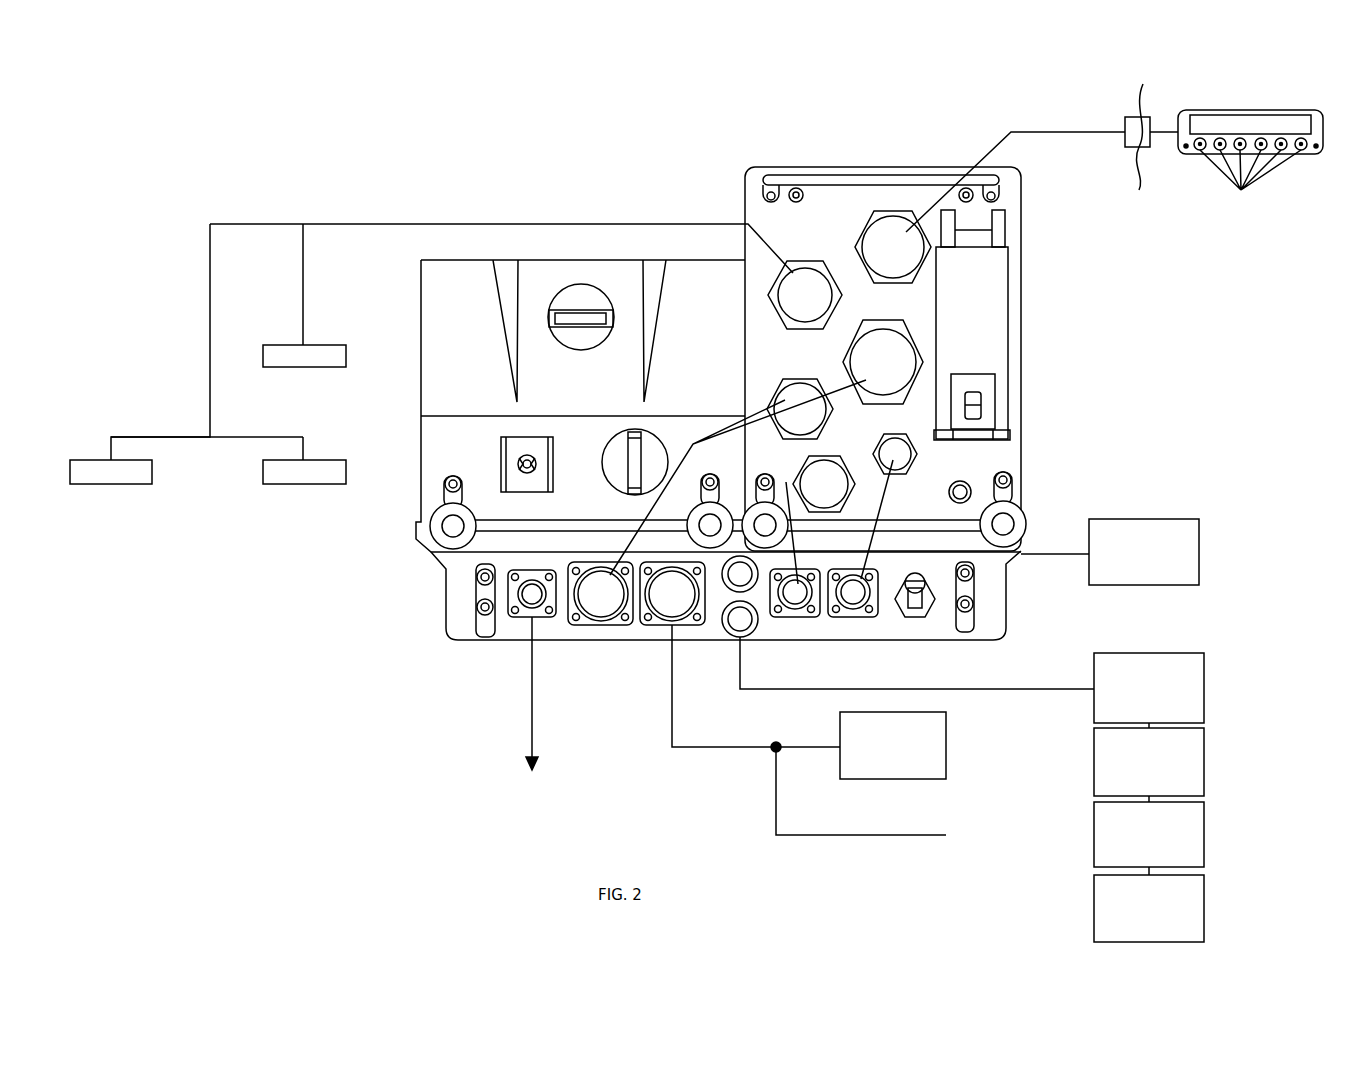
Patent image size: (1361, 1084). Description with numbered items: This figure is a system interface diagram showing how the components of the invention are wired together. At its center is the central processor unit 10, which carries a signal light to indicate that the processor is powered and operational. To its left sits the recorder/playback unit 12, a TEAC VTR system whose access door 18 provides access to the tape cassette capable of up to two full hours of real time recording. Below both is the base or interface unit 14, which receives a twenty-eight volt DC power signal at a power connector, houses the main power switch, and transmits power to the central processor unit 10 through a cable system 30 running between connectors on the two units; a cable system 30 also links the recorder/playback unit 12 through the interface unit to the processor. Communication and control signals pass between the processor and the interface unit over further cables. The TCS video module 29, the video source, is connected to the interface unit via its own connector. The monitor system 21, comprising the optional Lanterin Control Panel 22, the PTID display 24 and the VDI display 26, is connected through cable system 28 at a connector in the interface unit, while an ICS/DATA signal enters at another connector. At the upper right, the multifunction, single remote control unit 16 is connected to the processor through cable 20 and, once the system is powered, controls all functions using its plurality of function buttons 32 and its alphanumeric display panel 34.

The central processor unit 10 is at (1020, 337).
The recorder/playback unit 12 is at (418, 283).
The base or interface unit 14 is at (440, 602).
The multifunction, single remote control unit 16 is at (1320, 128).
The access door 18 is at (702, 273).
The cable 20 is at (1057, 130).
The monitor system 21 is at (1201, 757).
The Lanterin Control Panel 22 is at (1201, 682).
The PTID display 24 is at (1201, 831).
The VDI display 26 is at (1201, 904).
The cable system 28 is at (970, 687).
The TCS video module 29 is at (1196, 549).
The cable system 30 is at (532, 222).
The function buttons 32 is at (1250, 181).
The alphanumeric display panel 34 is at (1287, 118).